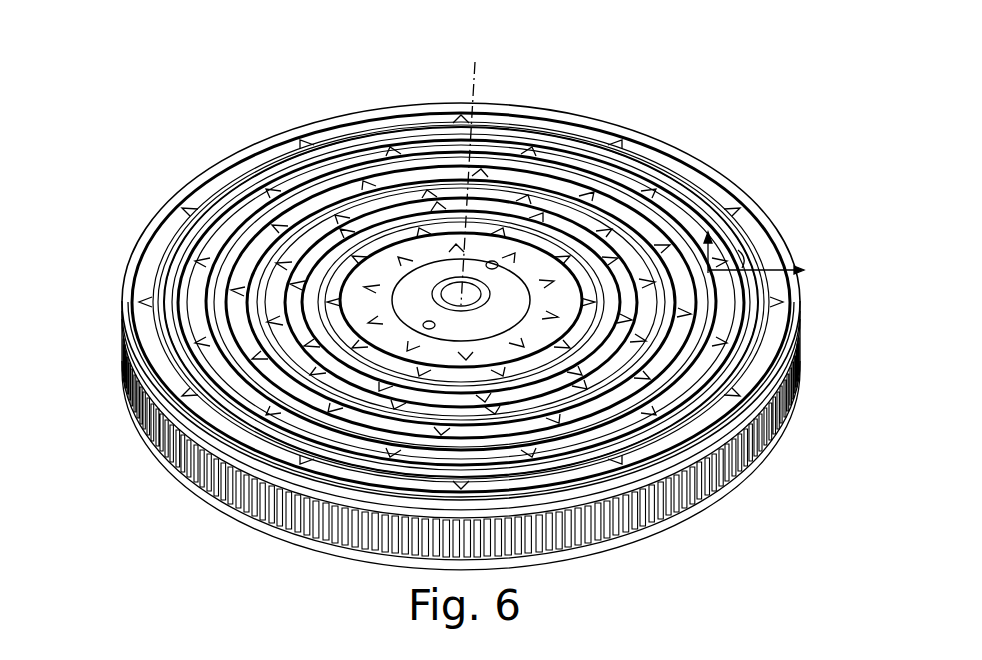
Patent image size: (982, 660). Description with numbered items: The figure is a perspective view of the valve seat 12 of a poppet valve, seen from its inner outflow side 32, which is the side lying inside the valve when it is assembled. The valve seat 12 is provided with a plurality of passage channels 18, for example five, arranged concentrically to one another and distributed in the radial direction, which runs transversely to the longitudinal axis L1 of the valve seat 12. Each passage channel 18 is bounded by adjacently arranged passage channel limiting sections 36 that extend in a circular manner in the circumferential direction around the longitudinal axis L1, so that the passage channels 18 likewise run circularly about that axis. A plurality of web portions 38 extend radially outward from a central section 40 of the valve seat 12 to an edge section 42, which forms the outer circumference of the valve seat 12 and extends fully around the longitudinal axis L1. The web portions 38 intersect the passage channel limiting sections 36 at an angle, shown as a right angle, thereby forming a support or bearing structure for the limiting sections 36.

The valve seat 12 is at (810, 134).
The passage channels 18 is at (335, 266).
The inner outflow side 32 is at (502, 142).
The passage channel limiting sections 36 is at (668, 188).
The web portions 38 is at (708, 313).
The central section 40 is at (397, 313).
The edge section 42 is at (172, 377).
The longitudinal axis L1 is at (470, 73).